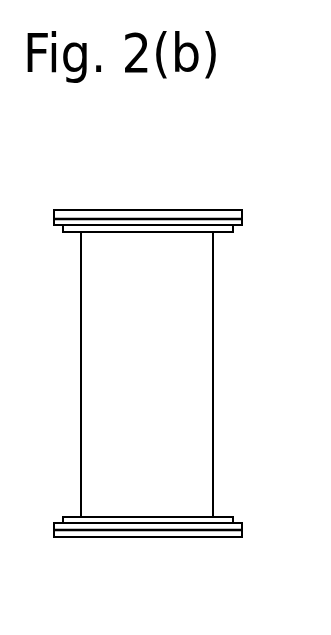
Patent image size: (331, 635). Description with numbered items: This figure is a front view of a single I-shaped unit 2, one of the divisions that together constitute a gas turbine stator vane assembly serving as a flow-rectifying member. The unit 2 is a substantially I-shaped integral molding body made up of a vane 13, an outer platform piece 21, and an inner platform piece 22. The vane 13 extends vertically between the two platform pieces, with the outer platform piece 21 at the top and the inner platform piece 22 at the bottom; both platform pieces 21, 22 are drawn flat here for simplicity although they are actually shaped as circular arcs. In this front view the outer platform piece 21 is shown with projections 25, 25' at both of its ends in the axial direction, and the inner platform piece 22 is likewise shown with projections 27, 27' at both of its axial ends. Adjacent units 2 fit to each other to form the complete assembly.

The I-shaped unit 2 is at (204, 165).
The outer platform piece 21 is at (147, 219).
The inner platform piece 22 is at (151, 531).
The vane 13 is at (203, 373).
The projection 25 is at (48, 260).
The projection 25' is at (246, 259).
The projection 27 is at (49, 487).
The projection 27' is at (247, 486).